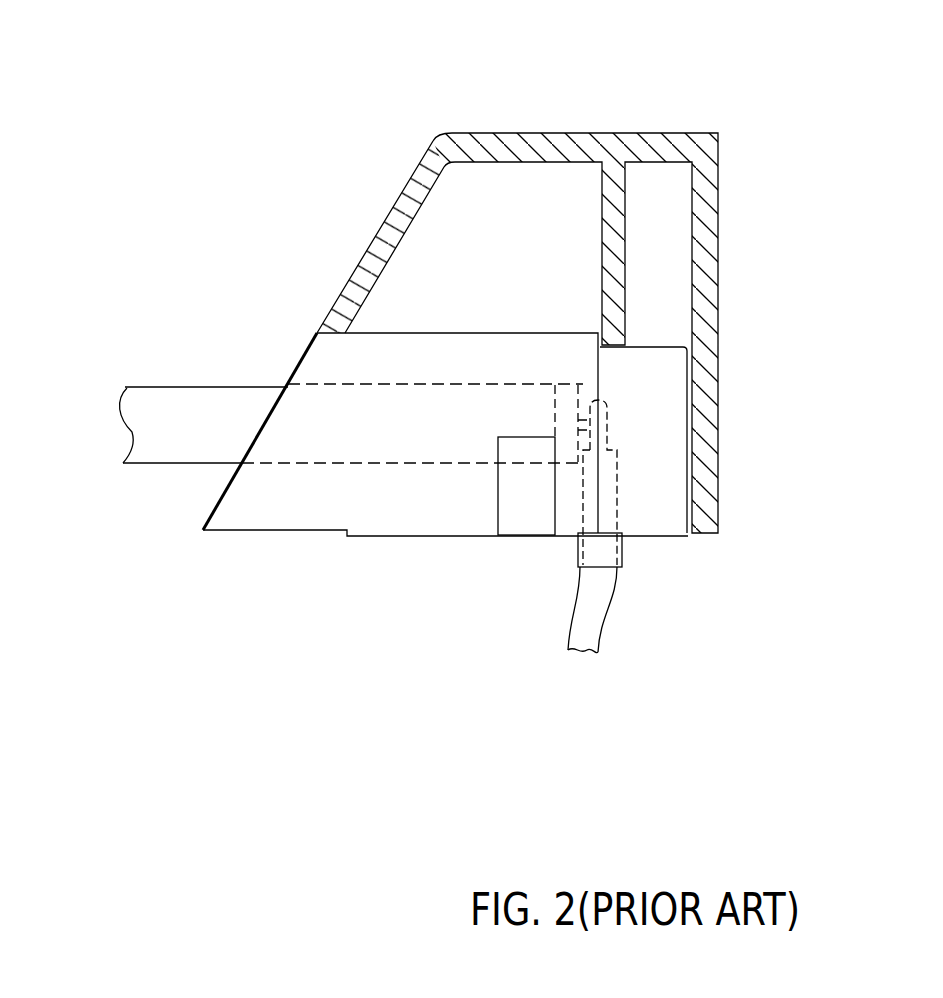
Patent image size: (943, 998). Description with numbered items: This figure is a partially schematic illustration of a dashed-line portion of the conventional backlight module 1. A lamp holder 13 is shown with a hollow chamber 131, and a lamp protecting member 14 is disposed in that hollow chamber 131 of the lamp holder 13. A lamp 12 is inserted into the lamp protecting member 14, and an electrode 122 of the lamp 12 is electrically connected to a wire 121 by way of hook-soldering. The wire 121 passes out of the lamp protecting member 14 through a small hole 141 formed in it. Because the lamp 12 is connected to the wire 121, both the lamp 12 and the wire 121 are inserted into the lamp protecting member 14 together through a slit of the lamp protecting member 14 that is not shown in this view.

The backlight module 1 is at (102, 36).
The lamp 12 is at (140, 430).
The wire 121 is at (595, 630).
The electrode 122 is at (610, 420).
The lamp holder 13 is at (713, 236).
The hollow chamber 131 is at (525, 195).
The lamp protecting member 14 is at (268, 517).
The small hole 141 is at (578, 572).